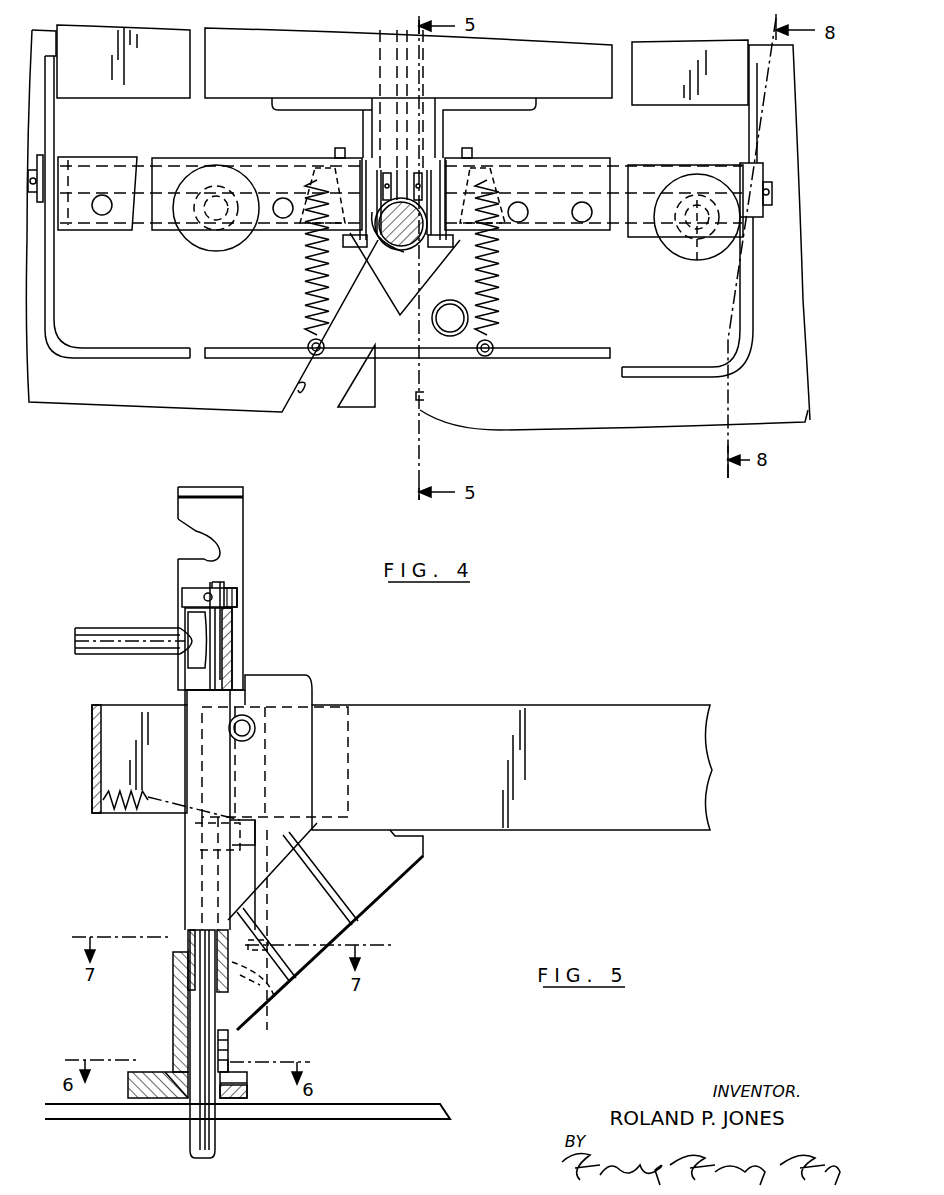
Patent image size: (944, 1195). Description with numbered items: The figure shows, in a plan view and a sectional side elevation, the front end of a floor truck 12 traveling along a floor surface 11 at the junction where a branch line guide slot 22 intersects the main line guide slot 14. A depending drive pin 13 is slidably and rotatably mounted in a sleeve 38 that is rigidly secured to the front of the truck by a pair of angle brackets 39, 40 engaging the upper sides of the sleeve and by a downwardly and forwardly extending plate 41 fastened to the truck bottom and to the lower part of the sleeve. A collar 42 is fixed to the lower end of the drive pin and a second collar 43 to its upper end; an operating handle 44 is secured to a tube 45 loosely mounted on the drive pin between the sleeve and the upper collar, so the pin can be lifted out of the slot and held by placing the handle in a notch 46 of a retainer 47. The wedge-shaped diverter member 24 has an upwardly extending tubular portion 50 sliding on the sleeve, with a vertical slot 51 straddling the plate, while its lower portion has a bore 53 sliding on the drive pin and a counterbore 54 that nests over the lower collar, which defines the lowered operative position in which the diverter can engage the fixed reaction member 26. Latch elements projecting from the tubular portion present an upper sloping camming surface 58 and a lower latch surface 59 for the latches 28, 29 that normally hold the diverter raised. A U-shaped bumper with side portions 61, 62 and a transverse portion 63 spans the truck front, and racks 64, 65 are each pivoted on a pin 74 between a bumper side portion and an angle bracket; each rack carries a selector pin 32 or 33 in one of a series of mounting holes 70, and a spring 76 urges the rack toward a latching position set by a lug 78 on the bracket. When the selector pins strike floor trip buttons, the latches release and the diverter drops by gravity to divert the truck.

In FIG. 4, the surface 11 is at (652, 404).
In FIG. 5, the surface 11 is at (404, 1103).
In FIG. 4, the floor truck 12 is at (305, 42).
In FIG. 5, the floor truck 12 is at (530, 705).
In FIG. 4, the drive pin 13 is at (387, 169).
In FIG. 5, the drive pin 13 is at (213, 580).
In FIG. 4, the main line guide slot 14 is at (424, 396).
In FIG. 4, the branch line guide slot 22 is at (298, 386).
In FIG. 4, the wedge-shaped diverter member 24 is at (405, 274).
In FIG. 5, the wedge-shaped diverter member 24 is at (127, 1092).
In FIG. 4, the fixed reaction member 26 is at (448, 320).
In FIG. 4, the latch 28 is at (335, 151).
In FIG. 5, the latch 28 is at (268, 857).
In FIG. 4, the latch 29 is at (472, 152).
In FIG. 4, the selector pin 32 is at (210, 235).
In FIG. 4, the selector pin 33 is at (697, 233).
In FIG. 4, the sleeve 38 is at (402, 252).
In FIG. 5, the sleeve 38 is at (185, 885).
In FIG. 4, the angle bracket 39 is at (368, 133).
In FIG. 5, the angle bracket 39 is at (266, 695).
In FIG. 4, the angle bracket 40 is at (437, 145).
In FIG. 4, the plate 41 is at (400, 126).
In FIG. 5, the plate 41 is at (360, 905).
In FIG. 5, the collar 42 is at (247, 1087).
In FIG. 5, the second collar 43 is at (237, 597).
In FIG. 5, the operating handle 44 is at (115, 634).
In FIG. 5, the tube 45 is at (232, 636).
In FIG. 5, the notch 46 is at (181, 536).
In FIG. 5, the retainer 47 is at (243, 508).
In FIG. 5, the tubular portion 50 is at (173, 1010).
In FIG. 5, the vertical slot 51 is at (235, 1040).
In FIG. 5, the bore 53 is at (232, 1075).
In FIG. 5, the counterbore 54 is at (172, 1096).
In FIG. 5, the upper sloping camming surface 58 is at (265, 945).
In FIG. 5, the lower latch surface 59 is at (278, 995).
In FIG. 4, the bumper side portion 61 is at (50, 141).
In FIG. 4, the bumper side portion 62 is at (752, 155).
In FIG. 4, the transverse portion 63 is at (166, 360).
In FIG. 4, the rack 64 is at (188, 151).
In FIG. 4, the rack 65 is at (598, 158).
In FIG. 4, the selector pin mounting holes 70 is at (582, 215).
In FIG. 4, the pin 74 is at (773, 193).
In FIG. 5, the pin 74 is at (250, 727).
In FIG. 4, the spring 76 is at (500, 288).
In FIG. 4, the lug 78 is at (440, 238).